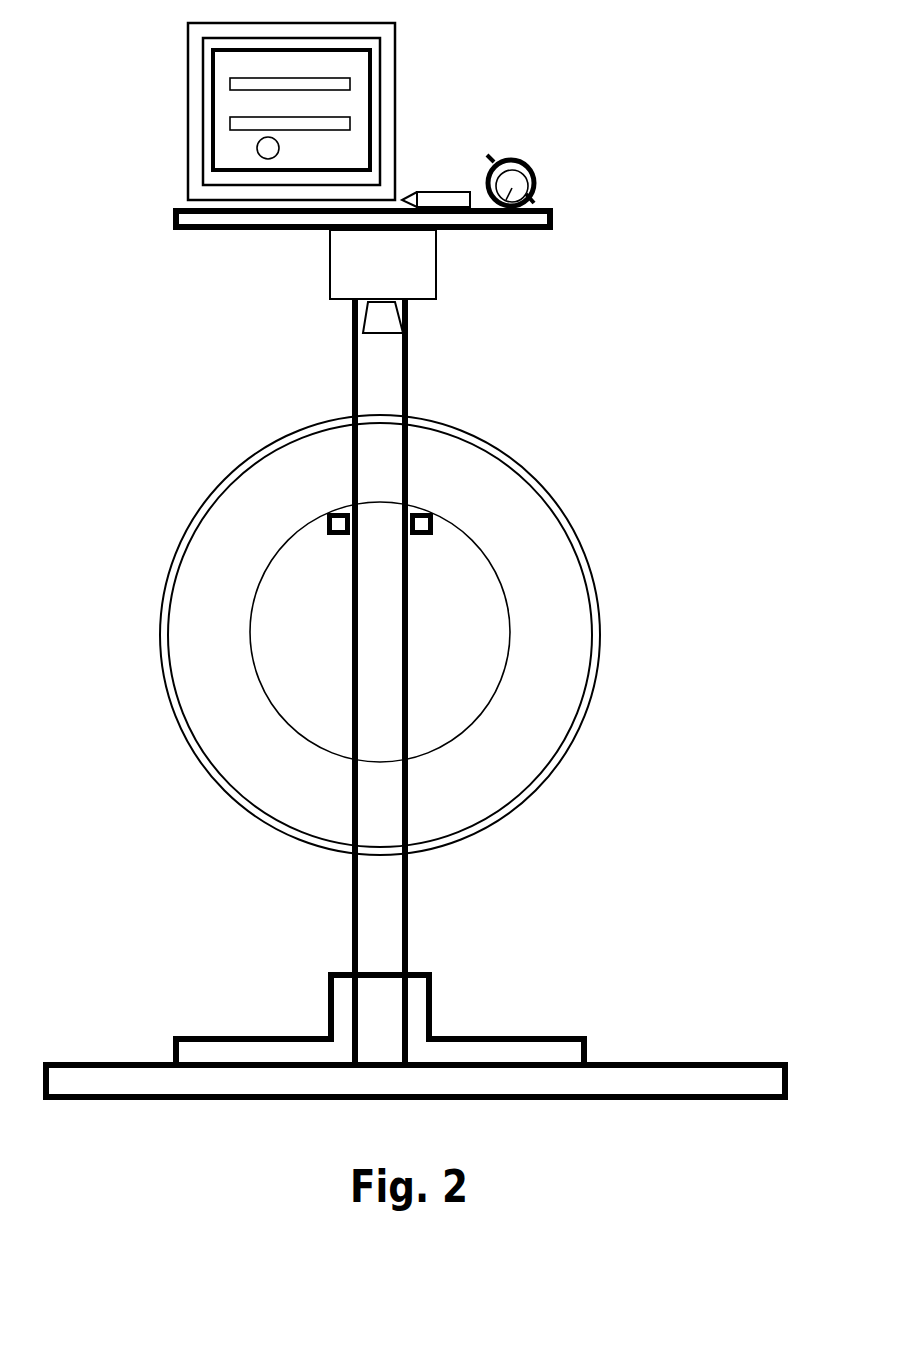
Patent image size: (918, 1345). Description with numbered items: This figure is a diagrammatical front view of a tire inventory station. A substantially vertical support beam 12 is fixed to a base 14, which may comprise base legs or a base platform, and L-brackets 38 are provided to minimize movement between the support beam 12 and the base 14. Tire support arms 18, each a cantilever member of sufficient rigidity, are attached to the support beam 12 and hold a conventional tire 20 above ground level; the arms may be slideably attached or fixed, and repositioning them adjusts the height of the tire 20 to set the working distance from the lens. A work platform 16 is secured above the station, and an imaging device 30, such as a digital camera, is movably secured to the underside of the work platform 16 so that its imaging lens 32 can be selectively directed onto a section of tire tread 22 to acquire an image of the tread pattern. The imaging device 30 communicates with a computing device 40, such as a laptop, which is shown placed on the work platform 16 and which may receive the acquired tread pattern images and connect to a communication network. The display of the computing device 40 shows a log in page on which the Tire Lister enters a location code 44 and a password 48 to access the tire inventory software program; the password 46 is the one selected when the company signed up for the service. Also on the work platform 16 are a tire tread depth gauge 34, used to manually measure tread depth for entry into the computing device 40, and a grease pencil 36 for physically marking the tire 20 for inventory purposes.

The support beam 12 is at (345, 382).
The base 14 is at (620, 1060).
The work platform 16 is at (178, 210).
The tire support arms 18 is at (332, 540).
The tire 20 is at (568, 672).
The tire tread 22 is at (447, 847).
The imaging device 30 is at (440, 263).
The imaging lens 32 is at (405, 323).
The tire tread depth gauge 34 is at (513, 158).
The grease pencil 36 is at (423, 190).
The L-brackets 38 is at (473, 1035).
The computing device 40 is at (395, 77).
The location code 44 is at (223, 80).
The password 46 is at (223, 120).
The password 48 is at (345, 140).